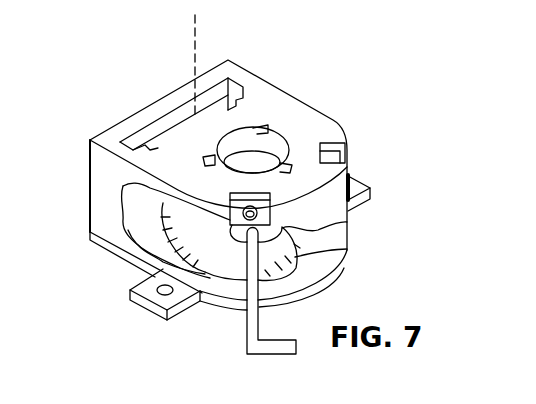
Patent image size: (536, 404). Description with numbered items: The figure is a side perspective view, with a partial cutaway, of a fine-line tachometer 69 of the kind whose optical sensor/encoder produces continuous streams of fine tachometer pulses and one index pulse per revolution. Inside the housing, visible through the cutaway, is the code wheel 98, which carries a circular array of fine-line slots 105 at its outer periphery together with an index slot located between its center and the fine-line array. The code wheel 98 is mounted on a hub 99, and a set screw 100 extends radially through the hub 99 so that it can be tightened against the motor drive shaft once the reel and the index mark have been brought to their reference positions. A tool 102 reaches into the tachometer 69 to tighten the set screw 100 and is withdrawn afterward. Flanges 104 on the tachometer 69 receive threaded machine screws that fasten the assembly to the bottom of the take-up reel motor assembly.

The tachometer 69 is at (288, 93).
The code wheel 98 is at (127, 221).
The hub 99 is at (350, 253).
The set screw 100 is at (350, 225).
The tool 102 is at (247, 347).
The flanges 104 is at (138, 307).
The fine-line slots 105 is at (190, 35).